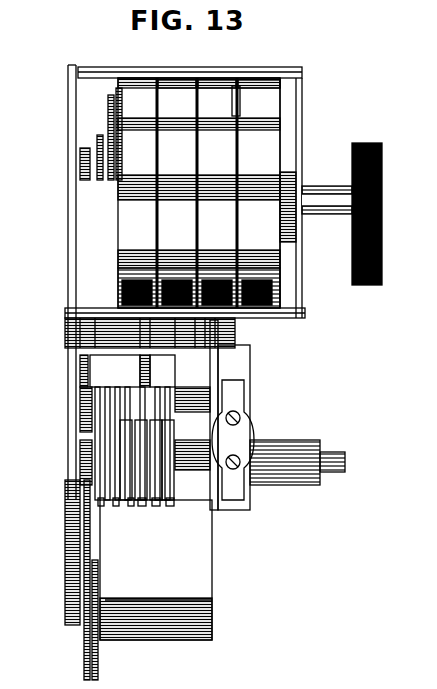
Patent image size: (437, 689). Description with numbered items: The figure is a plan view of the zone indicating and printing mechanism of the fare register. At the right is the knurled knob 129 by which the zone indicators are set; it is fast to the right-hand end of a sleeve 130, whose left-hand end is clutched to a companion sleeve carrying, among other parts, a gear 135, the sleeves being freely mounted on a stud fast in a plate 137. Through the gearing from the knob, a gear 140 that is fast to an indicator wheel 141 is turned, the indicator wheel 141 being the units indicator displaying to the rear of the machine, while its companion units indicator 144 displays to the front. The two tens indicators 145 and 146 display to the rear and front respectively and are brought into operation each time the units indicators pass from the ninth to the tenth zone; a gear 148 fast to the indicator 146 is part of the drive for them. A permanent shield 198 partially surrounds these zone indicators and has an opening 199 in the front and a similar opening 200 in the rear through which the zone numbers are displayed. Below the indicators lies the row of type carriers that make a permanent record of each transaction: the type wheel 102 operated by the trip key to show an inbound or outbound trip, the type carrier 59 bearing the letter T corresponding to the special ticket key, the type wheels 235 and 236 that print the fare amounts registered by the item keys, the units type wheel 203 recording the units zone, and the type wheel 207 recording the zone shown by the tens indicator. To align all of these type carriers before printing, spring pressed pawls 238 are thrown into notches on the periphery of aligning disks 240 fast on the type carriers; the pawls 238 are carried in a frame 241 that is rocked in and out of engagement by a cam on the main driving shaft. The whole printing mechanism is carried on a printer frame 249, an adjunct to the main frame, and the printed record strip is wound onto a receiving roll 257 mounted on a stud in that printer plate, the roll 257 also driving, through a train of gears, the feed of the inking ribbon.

The knurled knob 129 is at (377, 168).
The sleeve 130 is at (318, 186).
The gear 135 is at (82, 150).
The plate 137 is at (70, 80).
The gear 140 is at (112, 96).
The indicator wheel 141 is at (120, 98).
The indicator 144 is at (262, 124).
The indicator 145 is at (200, 92).
The indicator 146 is at (240, 88).
The gear 148 is at (236, 90).
The permanent shield 198 is at (297, 80).
The opening 199 is at (272, 320).
The opening 200 is at (182, 92).
The units type wheel 203 is at (156, 506).
The type wheel 207 is at (172, 504).
The type wheel 235 is at (131, 506).
The type wheel 236 is at (142, 506).
The spring pressed pawls 238 is at (100, 425).
The aligning disks 240 is at (100, 500).
The frame 241 is at (100, 368).
The printer frame 249 is at (70, 522).
The receiving roll 257 is at (178, 642).
The type carrier 59 is at (116, 506).
The type wheel 102 is at (101, 506).